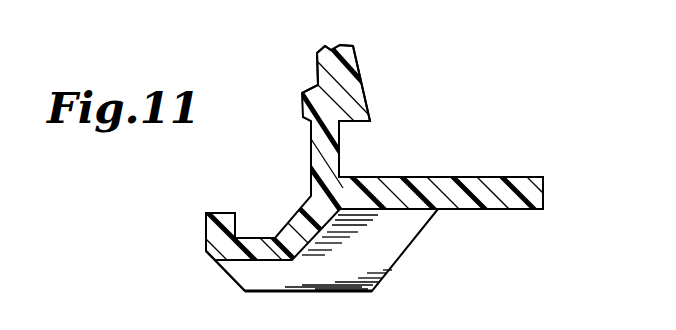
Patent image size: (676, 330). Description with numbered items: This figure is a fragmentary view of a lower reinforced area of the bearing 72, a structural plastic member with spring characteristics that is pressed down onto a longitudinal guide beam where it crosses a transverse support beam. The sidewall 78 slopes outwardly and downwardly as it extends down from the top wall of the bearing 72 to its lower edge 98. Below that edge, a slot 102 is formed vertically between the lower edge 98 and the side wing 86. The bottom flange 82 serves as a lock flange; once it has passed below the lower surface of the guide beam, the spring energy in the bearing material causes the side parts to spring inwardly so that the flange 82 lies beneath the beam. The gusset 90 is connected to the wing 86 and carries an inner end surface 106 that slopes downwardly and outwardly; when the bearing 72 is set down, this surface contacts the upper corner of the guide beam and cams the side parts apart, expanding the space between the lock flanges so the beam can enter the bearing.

The bearing 72 is at (378, 92).
The sidewall 78 is at (365, 65).
The bottom flange 82 is at (215, 232).
The side wing 86 is at (493, 204).
The gusset 90 is at (383, 257).
The lower edge 98 is at (363, 129).
The slot 102 is at (352, 154).
The inner end surface 106 is at (231, 278).